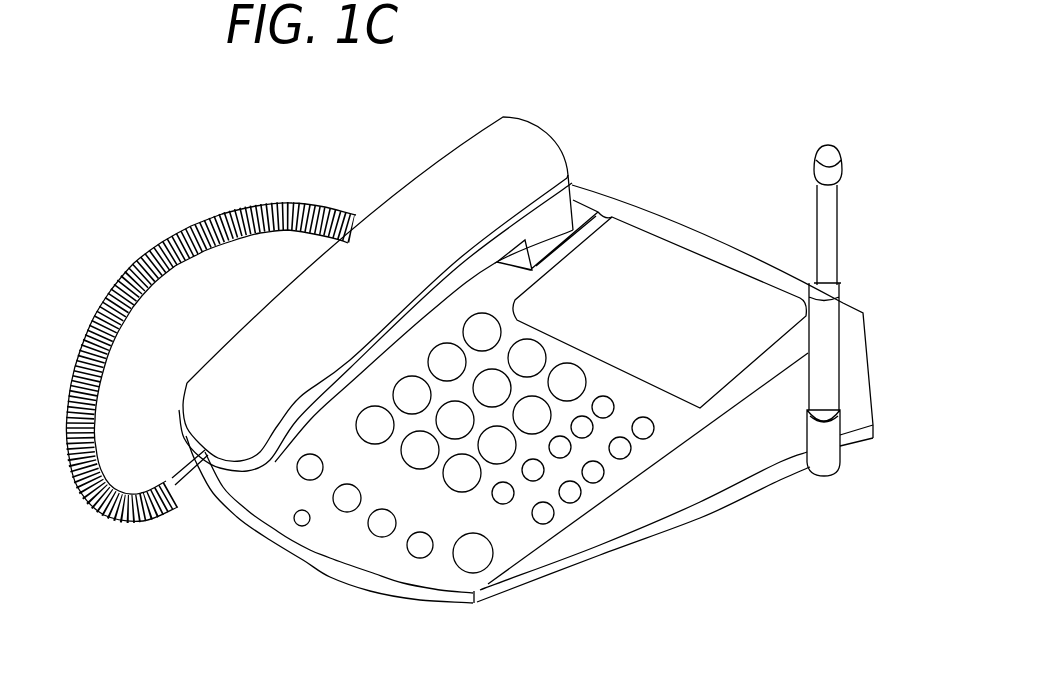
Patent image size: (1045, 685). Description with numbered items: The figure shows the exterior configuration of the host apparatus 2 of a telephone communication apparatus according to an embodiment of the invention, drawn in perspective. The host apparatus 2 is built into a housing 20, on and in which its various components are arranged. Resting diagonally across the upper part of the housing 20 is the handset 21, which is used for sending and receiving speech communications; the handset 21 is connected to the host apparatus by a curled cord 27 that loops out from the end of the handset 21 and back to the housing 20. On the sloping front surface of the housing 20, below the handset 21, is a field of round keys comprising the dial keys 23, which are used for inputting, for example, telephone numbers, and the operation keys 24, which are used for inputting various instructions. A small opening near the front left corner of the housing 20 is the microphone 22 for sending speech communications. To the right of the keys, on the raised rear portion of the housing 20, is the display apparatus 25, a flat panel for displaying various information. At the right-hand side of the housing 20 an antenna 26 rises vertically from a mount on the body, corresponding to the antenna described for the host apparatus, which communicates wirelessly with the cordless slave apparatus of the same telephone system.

The host apparatus 2 is at (513, 62).
The housing 20 is at (638, 215).
The handset 21 is at (393, 215).
The microphone 22 is at (296, 514).
The dial keys 23 is at (533, 420).
The operation keys 24 is at (383, 527).
The display apparatus 25 is at (701, 297).
The antenna 26 is at (828, 146).
The curled cord 27 is at (170, 258).